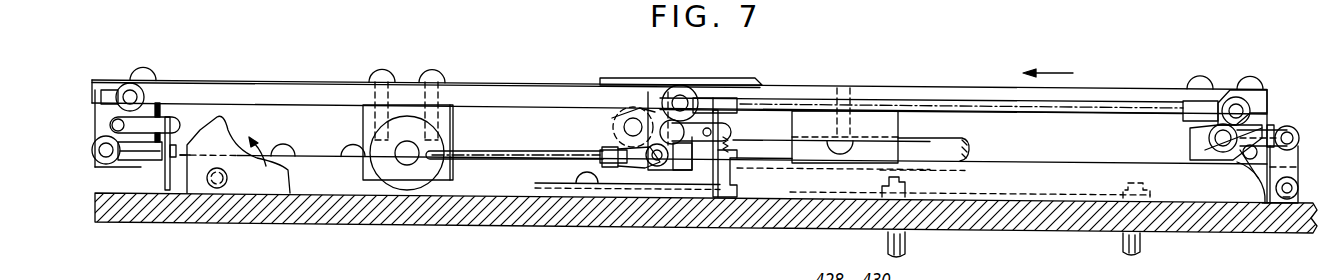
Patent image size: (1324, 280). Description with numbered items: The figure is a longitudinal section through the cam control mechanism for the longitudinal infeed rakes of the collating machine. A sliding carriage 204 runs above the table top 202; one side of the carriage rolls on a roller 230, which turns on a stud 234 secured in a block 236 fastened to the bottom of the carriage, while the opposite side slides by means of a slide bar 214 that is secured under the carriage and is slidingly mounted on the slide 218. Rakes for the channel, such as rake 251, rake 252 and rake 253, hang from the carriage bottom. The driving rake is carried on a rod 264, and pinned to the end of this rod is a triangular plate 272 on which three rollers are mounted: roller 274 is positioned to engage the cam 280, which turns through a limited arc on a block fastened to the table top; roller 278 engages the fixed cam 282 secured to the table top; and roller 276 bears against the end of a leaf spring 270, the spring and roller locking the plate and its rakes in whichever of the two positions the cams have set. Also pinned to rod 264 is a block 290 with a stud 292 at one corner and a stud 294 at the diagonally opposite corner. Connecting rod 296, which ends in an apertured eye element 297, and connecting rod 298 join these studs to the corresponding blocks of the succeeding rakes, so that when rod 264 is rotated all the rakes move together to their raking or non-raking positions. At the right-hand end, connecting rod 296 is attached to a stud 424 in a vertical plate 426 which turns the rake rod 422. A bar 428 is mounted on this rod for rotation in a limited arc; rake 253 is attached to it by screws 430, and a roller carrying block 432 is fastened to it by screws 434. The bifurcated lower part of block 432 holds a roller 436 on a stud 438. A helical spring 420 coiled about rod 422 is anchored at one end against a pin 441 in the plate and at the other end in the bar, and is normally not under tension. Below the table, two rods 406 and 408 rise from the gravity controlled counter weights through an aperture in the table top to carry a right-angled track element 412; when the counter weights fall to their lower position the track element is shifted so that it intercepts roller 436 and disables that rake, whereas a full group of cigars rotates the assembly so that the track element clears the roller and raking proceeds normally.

The table top 202 is at (1013, 230).
The carriage 204 is at (1101, 88).
The slide bar 214 is at (881, 125).
The slide 218 is at (946, 142).
The roller 230 is at (403, 117).
The stud 234 is at (415, 150).
The block 236 is at (365, 126).
The post 251 is at (161, 192).
The rake 252 is at (805, 162).
The rake 253 is at (1262, 204).
The rod 264 is at (670, 163).
The leaf spring 270 is at (706, 93).
The plate 272 is at (651, 92).
The roller 274 is at (732, 125).
The roller 276 is at (715, 97).
The roller 278 is at (619, 118).
The cam 280 is at (246, 184).
The fixed cam 282 is at (632, 176).
The block 290 is at (652, 104).
The stud 292 is at (681, 97).
The stud 294 is at (653, 152).
The connecting rod 296 is at (806, 113).
The eye element 297 is at (739, 98).
The connecting rod 298 is at (533, 150).
The rod 406 is at (1124, 245).
The rod 408 is at (907, 246).
The track element 412 is at (1013, 167).
The helical spring 420 is at (1237, 158).
The rake rod 422 is at (1224, 127).
The stud 424 is at (1237, 104).
The vertical plate 426 is at (1209, 139).
The bar 428 is at (1269, 126).
The screws 430 is at (1299, 140).
The roller carrying block 432 is at (1271, 130).
The screws 434 is at (1283, 133).
The roller 436 is at (1288, 200).
The stud 438 is at (1283, 198).
The pin 441 is at (1252, 160).